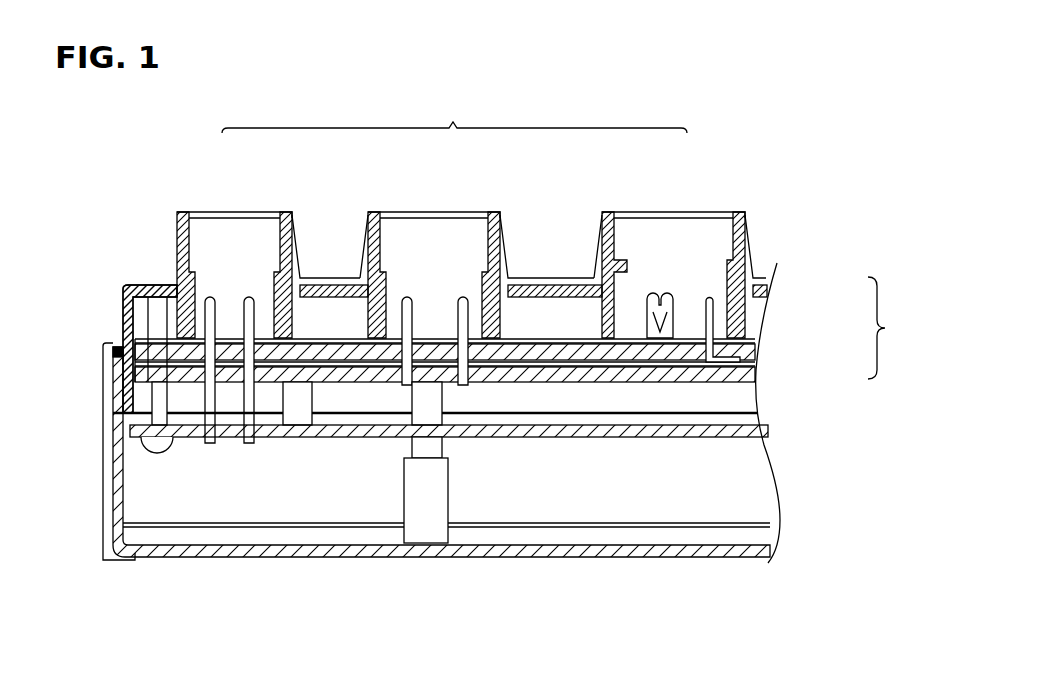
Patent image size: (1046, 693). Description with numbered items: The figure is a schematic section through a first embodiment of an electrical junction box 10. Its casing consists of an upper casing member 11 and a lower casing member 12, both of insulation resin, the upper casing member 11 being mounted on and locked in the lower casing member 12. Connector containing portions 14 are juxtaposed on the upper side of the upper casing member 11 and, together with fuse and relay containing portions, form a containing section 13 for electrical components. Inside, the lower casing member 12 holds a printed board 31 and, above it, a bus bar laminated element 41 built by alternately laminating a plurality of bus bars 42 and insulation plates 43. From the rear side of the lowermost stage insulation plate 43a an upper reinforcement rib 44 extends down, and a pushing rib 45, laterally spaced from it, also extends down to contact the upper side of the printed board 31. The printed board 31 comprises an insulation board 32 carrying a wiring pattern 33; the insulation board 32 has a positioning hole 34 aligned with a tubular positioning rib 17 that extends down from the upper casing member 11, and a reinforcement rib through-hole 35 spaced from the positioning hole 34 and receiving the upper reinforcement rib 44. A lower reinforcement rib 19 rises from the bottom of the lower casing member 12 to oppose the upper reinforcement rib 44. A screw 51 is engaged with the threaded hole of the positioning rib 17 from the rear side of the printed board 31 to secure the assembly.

The electrical junction box 10 is at (138, 250).
The upper casing member 11 is at (122, 300).
The lower casing member 12 is at (165, 557).
The containing section 13 is at (454, 115).
The connector containing portions 14 is at (242, 226).
The positioning rib 17 is at (128, 353).
The lower reinforcement rib 19 is at (447, 487).
The printed board 31 is at (496, 466).
The insulation board 32 is at (770, 431).
The wiring pattern 33 is at (762, 413).
The positioning hole 34 is at (120, 413).
The reinforcement rib through-hole 35 is at (447, 440).
The bus bar laminated element 41 is at (889, 328).
The bus bars 42 is at (757, 341).
The insulation plates 43 is at (757, 353).
The lowermost stage insulation plate 43a is at (757, 376).
The upper reinforcement rib 44 is at (410, 398).
The pushing rib 45 is at (278, 400).
The screw 51 is at (157, 445).